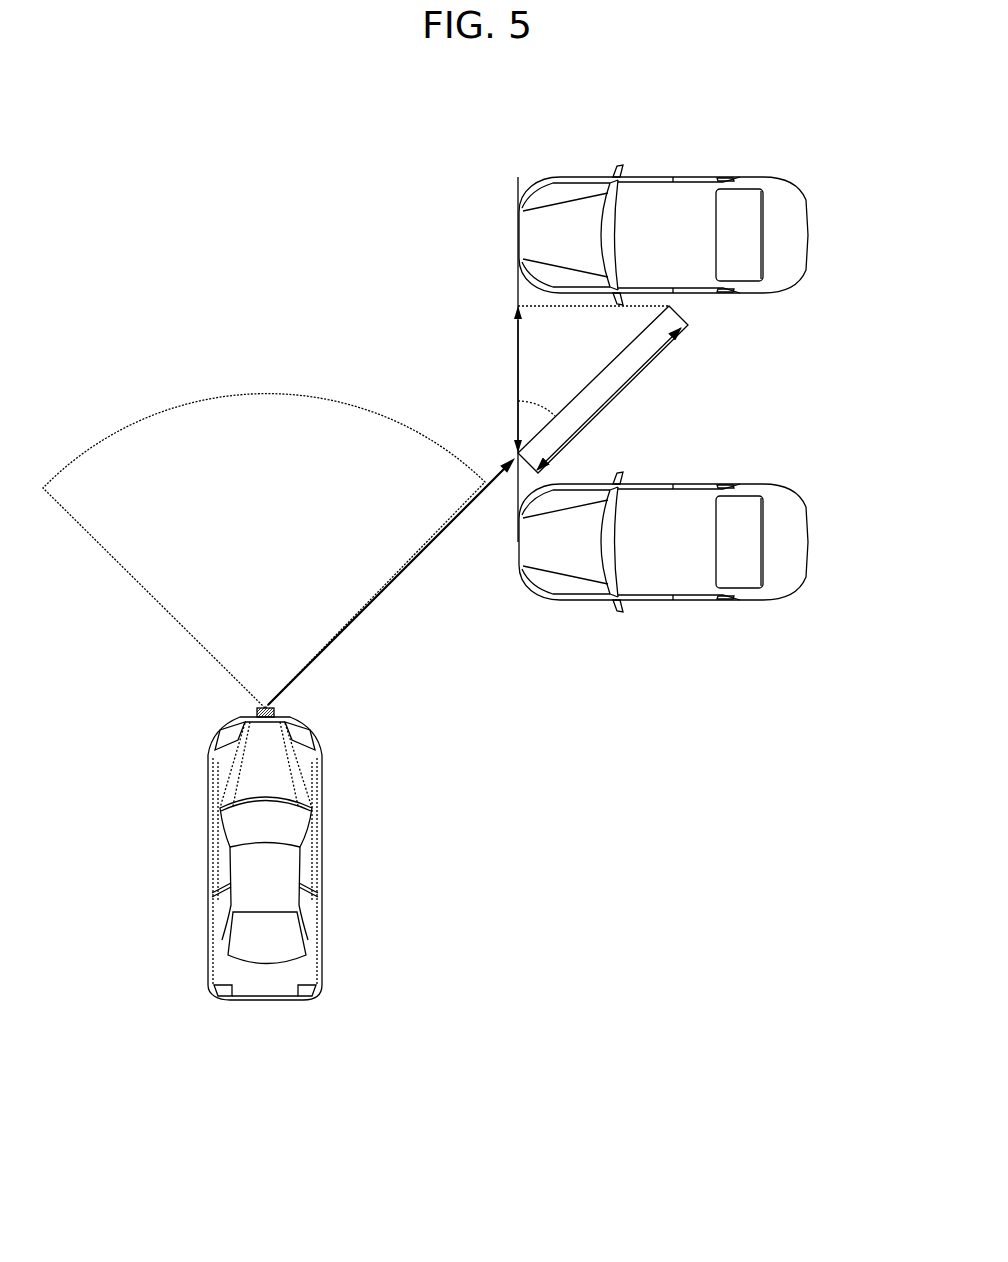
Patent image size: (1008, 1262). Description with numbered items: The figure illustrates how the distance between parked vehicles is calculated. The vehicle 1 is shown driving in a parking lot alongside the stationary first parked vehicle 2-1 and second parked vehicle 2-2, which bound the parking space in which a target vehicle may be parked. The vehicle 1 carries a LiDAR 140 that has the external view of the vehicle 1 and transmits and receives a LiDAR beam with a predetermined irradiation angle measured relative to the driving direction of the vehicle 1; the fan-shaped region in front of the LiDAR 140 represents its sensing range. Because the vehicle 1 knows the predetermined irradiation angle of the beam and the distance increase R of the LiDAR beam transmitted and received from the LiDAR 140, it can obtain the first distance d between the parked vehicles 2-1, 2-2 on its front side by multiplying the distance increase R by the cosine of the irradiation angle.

The vehicle 1 is at (256, 1020).
The LiDAR 140 is at (257, 712).
The first parked vehicle 2-1 is at (794, 168).
The second parked vehicle 2-2 is at (785, 481).
The first distance d is at (515, 375).
The distance increase R is at (642, 385).